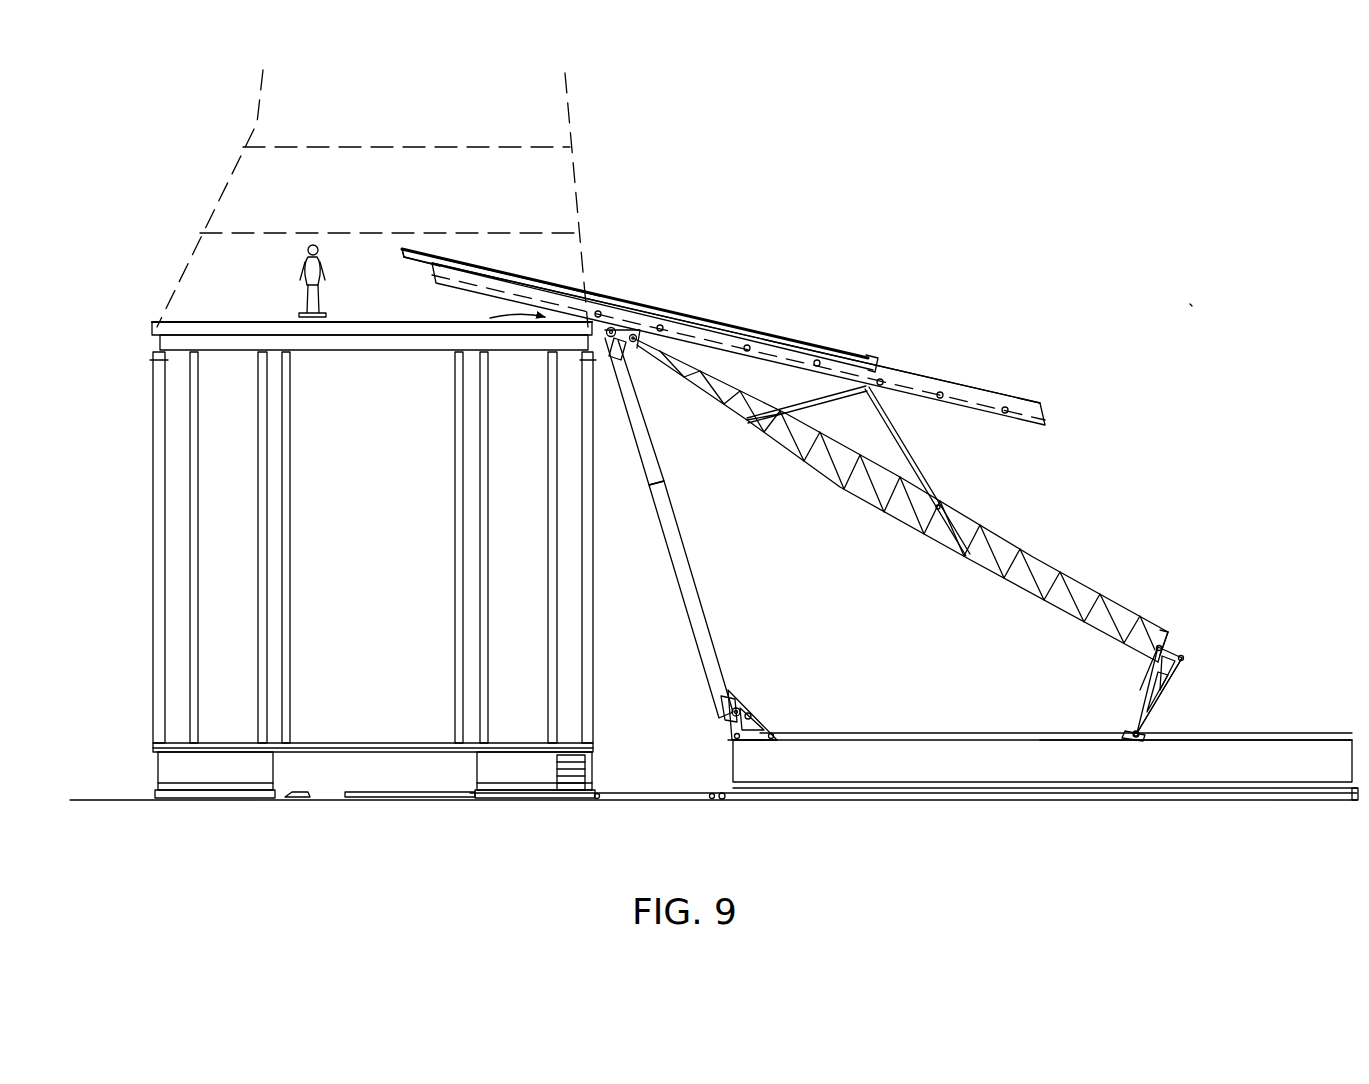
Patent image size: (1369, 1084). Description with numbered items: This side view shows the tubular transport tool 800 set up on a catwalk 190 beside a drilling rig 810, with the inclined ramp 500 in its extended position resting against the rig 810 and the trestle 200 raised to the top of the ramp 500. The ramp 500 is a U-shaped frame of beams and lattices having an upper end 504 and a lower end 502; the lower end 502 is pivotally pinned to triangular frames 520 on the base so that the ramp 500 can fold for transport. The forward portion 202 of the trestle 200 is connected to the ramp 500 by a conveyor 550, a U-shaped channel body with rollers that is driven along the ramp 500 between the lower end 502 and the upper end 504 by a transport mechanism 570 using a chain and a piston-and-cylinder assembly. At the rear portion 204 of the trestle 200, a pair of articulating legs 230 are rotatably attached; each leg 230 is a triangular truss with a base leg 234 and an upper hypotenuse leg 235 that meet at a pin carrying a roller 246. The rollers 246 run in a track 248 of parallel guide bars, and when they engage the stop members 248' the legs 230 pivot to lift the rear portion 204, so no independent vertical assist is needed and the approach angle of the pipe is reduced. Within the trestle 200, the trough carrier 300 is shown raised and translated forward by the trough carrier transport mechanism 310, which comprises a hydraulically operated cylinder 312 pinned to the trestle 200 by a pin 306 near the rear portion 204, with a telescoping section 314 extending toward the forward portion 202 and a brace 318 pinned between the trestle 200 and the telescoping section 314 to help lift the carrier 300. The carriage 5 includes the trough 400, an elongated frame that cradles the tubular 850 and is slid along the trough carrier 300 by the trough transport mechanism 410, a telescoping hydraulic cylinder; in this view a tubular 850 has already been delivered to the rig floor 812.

The carriage 5 is at (506, 317).
The catwalk 190 is at (733, 752).
The trestle 200 is at (1132, 594).
The forward portion of the trestle 202 is at (672, 362).
The rear portion of the trestle 204 is at (1168, 640).
The articulating leg 230 is at (1184, 650).
The base leg 234 is at (1150, 678).
The hypotenuse leg 235 is at (1155, 708).
The roller 246 is at (1130, 735).
The track 248 is at (1250, 799).
The stop member 248' is at (1100, 799).
The trough carrier 300 is at (1013, 390).
The pin 306 is at (965, 560).
The trough carrier transport mechanism 310 is at (908, 424).
The hydraulically operated cylinder 312 is at (945, 490).
The telescoping section 314 is at (878, 442).
The brace 318 is at (795, 389).
The trough 400 is at (814, 362).
The trough transport mechanism 410 is at (490, 290).
The ramp 500 is at (716, 585).
The lower end of the ramp 502 is at (730, 660).
The upper end of the ramp 504 is at (630, 418).
The triangular frame 520 is at (752, 745).
The conveyor 550 is at (624, 338).
The transport mechanism 570 is at (790, 711).
The tubular transport tool 800 is at (1192, 306).
The drilling rig 810 is at (122, 318).
The rig floor 812 is at (246, 322).
The tubular 850 is at (411, 247).